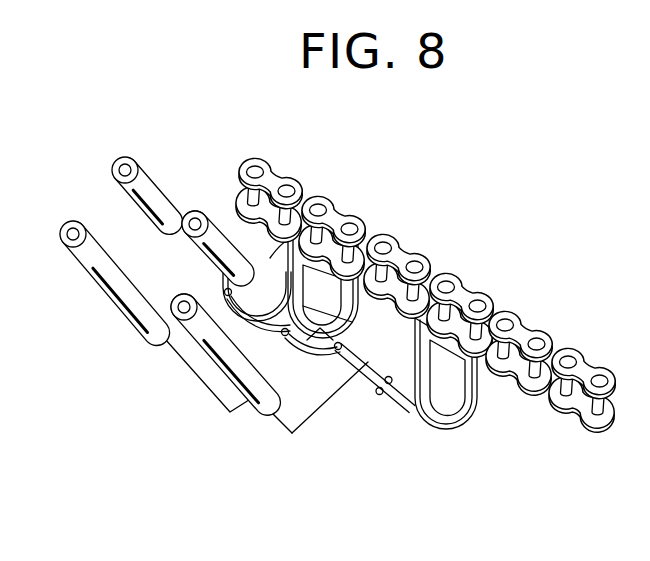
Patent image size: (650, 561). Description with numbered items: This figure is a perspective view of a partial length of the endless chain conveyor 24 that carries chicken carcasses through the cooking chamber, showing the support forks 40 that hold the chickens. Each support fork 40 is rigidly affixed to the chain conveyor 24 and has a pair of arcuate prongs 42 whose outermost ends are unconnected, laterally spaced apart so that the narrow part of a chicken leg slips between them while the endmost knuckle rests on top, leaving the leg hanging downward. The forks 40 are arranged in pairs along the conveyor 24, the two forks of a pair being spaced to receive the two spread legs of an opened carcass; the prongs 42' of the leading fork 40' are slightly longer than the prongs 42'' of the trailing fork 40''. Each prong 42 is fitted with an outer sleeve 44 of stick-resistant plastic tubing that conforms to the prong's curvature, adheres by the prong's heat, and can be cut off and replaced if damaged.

The chain conveyor 24 is at (430, 256).
The support fork 40 is at (357, 336).
The leading fork 40' is at (470, 395).
The trailing fork 40'' is at (234, 234).
The arcuate prong 42 is at (378, 424).
The prong of leading fork 42' is at (375, 404).
The prong of trailing fork 42'' is at (220, 294).
The outer sleeve 44 is at (114, 160).